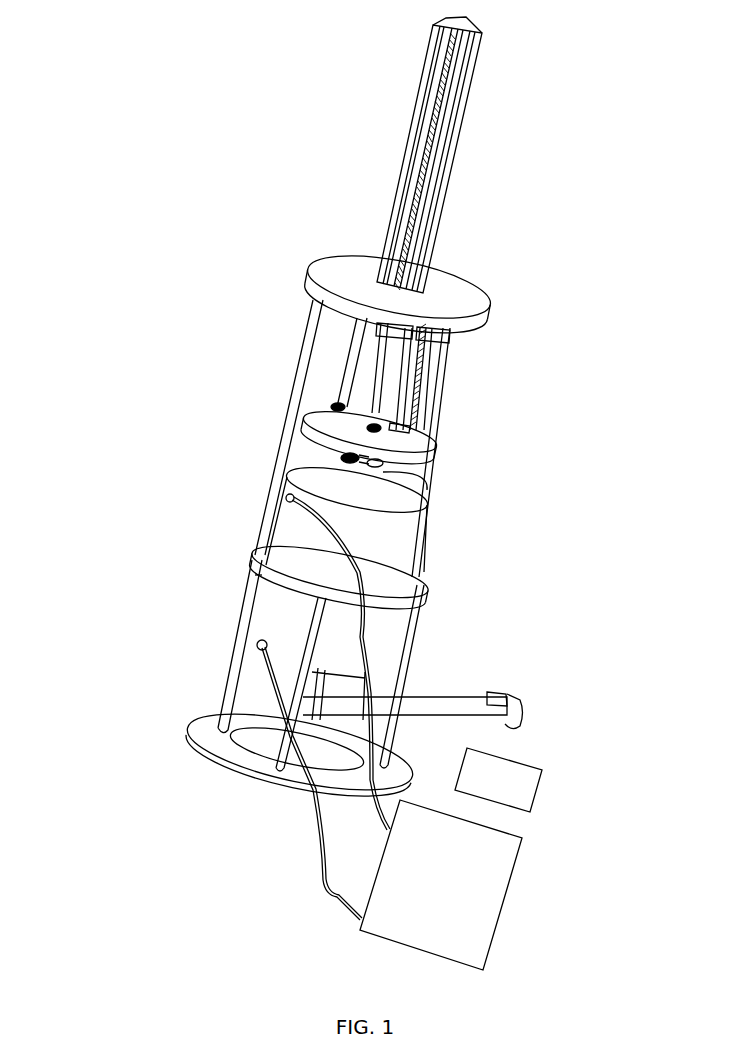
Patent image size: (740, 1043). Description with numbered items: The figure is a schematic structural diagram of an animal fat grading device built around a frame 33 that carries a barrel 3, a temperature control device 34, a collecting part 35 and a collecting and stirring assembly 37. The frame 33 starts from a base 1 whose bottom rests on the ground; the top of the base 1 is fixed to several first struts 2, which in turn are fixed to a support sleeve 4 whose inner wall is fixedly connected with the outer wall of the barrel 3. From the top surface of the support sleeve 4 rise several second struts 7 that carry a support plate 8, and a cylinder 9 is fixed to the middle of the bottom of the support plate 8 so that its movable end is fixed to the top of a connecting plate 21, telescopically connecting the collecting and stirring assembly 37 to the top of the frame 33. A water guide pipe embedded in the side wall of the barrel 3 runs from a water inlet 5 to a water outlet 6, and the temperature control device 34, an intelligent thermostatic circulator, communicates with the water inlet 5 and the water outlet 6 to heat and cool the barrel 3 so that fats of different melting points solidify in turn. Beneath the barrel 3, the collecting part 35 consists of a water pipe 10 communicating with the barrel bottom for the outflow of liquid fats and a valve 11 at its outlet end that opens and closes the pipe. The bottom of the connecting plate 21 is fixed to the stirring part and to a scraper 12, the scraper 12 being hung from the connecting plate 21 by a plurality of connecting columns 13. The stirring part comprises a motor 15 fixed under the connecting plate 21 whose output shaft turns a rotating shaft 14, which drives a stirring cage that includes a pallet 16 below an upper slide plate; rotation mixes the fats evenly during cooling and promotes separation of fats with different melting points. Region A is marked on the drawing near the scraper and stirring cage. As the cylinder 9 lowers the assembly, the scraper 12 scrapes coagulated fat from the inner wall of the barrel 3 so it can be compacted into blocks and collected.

The base 1 is at (220, 748).
The first struts 2 is at (225, 697).
The barrel 3 is at (268, 617).
The support sleeve 4 is at (258, 574).
The water inlet 5 is at (267, 643).
The water outlet 6 is at (427, 515).
The second struts 7 is at (283, 457).
The support plate 8 is at (338, 297).
The cylinder 9 is at (410, 219).
The water pipe 10 is at (427, 708).
The valve 11 is at (507, 697).
The scraper 12 is at (430, 440).
The connecting columns 13 is at (413, 404).
The rotating shaft 14 is at (382, 383).
The motor 15 is at (440, 332).
The pallet 16 is at (395, 478).
The connecting plate 21 is at (392, 324).
The sensor region A is at (410, 449).
The frame 33 is at (110, 470).
The temperature control device 34 is at (443, 897).
The collecting part 35 is at (610, 640).
The collecting and stirring assembly 37 is at (608, 233).